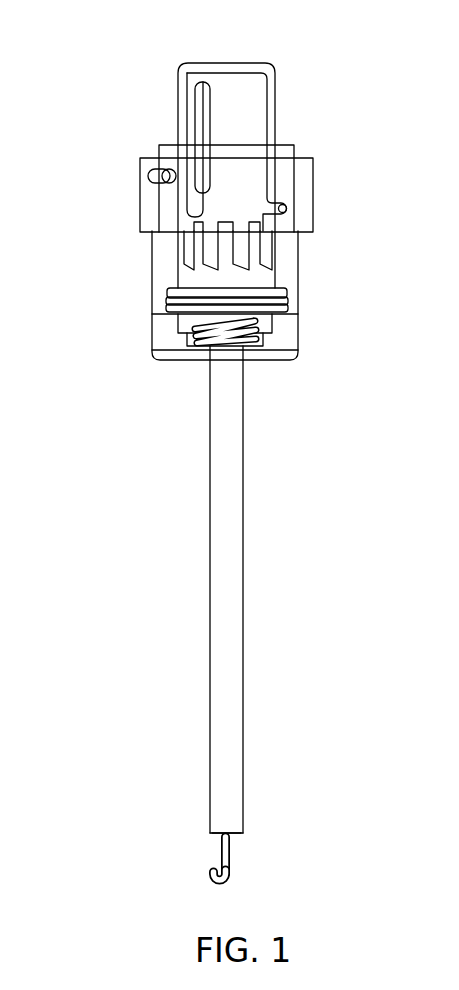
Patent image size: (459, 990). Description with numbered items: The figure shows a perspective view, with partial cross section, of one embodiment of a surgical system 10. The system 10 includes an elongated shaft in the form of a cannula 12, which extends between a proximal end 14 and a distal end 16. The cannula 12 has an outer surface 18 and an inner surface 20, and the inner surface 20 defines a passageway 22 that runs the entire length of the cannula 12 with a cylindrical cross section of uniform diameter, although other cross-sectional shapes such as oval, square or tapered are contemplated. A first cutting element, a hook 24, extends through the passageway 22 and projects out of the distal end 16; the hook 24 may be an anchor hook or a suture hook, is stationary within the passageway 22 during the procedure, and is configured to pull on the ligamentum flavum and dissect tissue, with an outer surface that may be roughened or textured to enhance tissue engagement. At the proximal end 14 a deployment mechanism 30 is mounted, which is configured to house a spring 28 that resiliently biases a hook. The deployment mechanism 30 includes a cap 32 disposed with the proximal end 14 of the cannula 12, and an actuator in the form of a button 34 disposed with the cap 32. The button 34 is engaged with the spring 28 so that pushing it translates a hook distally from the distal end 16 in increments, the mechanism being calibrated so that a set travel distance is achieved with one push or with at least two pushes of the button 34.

The system 10 is at (116, 447).
The cannula 12 is at (243, 478).
The proximal end 14 is at (243, 361).
The distal end 16 is at (243, 823).
The outer surface 18 is at (243, 410).
The inner surface 20 is at (242, 835).
The passageway 22 is at (202, 849).
The hook 24 is at (233, 873).
The spring 28 is at (273, 328).
The deployment mechanism 30 is at (90, 150).
The cap 32 is at (303, 187).
The button 34 is at (258, 90).